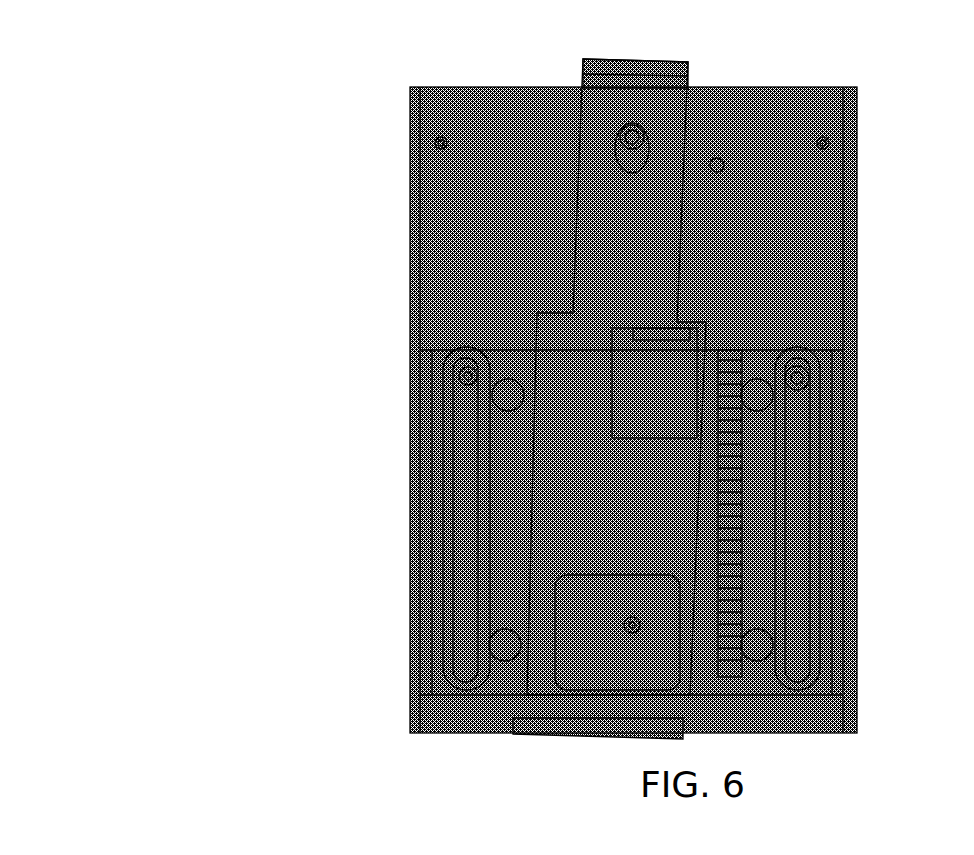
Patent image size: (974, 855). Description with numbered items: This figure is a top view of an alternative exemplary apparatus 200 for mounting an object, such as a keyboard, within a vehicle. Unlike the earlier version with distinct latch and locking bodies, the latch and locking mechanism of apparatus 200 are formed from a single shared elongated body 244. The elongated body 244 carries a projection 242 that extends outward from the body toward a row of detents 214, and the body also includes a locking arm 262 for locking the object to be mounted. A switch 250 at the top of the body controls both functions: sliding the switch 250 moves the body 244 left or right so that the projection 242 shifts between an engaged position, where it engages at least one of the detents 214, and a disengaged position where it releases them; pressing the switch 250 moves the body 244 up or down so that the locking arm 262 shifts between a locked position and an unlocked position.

The apparatus 200 is at (247, 206).
The switch 250 is at (688, 74).
The elongated body 244 is at (573, 213).
The projection 242 is at (718, 370).
The detents 214 is at (725, 447).
The locking arm 262 is at (524, 737).